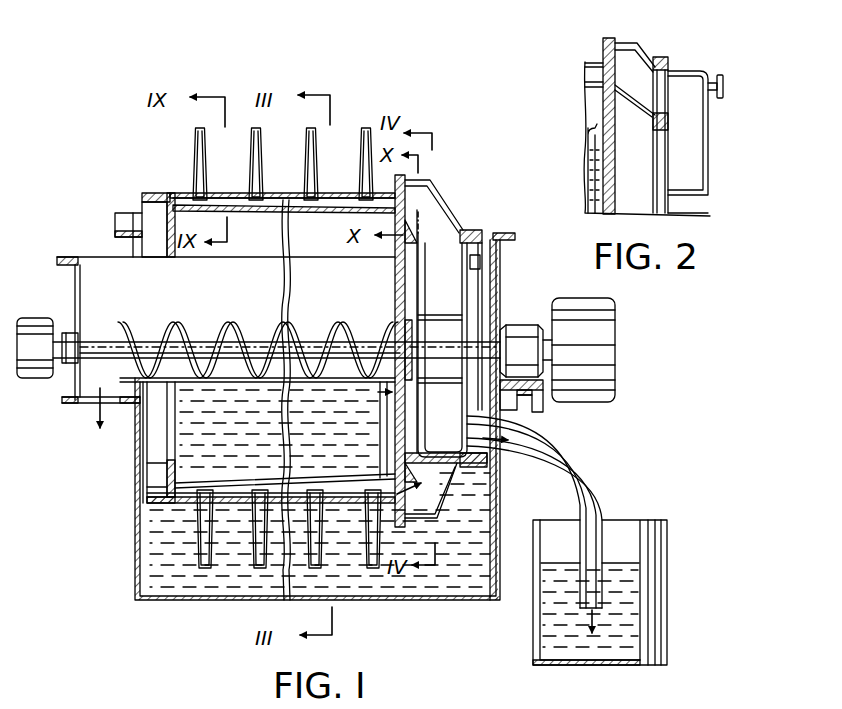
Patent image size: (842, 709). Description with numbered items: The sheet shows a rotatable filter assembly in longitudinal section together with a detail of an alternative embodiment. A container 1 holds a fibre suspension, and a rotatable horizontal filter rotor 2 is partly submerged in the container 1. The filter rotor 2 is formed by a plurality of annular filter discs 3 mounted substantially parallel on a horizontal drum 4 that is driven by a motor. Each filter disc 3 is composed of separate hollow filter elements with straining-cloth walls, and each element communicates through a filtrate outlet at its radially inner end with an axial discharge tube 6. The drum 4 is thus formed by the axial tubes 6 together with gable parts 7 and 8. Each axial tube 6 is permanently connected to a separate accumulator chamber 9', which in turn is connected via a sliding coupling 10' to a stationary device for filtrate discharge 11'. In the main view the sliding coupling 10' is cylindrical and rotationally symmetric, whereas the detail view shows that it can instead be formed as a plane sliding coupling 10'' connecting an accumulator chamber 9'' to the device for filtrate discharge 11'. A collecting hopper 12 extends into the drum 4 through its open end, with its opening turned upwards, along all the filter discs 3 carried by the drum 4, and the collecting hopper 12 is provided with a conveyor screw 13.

In FIG. 1, the container 1 is at (137, 495).
In FIG. 1, the filter rotor 2 is at (193, 457).
In FIG. 1, the annular filter discs 3 is at (193, 140).
In FIG. 1, the horizontal drum 4 is at (177, 193).
In FIG. 1, the axial discharge tube 6 is at (335, 194).
In FIG. 1, the gable part 7 is at (142, 196).
In FIG. 1, the gable part 8 is at (398, 492).
In FIG. 1, the accumulator chamber 9' is at (439, 350).
In FIG. 1, the sliding coupling 10' is at (499, 299).
In FIG. 1, the device for filtrate discharge 11' is at (536, 449).
In FIG. 2, the device for filtrate discharge 11' is at (713, 142).
In FIG. 1, the collecting hopper 12 is at (100, 280).
In FIG. 1, the conveyor screw 13 is at (140, 345).
In FIG. 2, the accumulator chamber 9'' is at (640, 60).
In FIG. 2, the plane sliding coupling 10'' is at (690, 118).